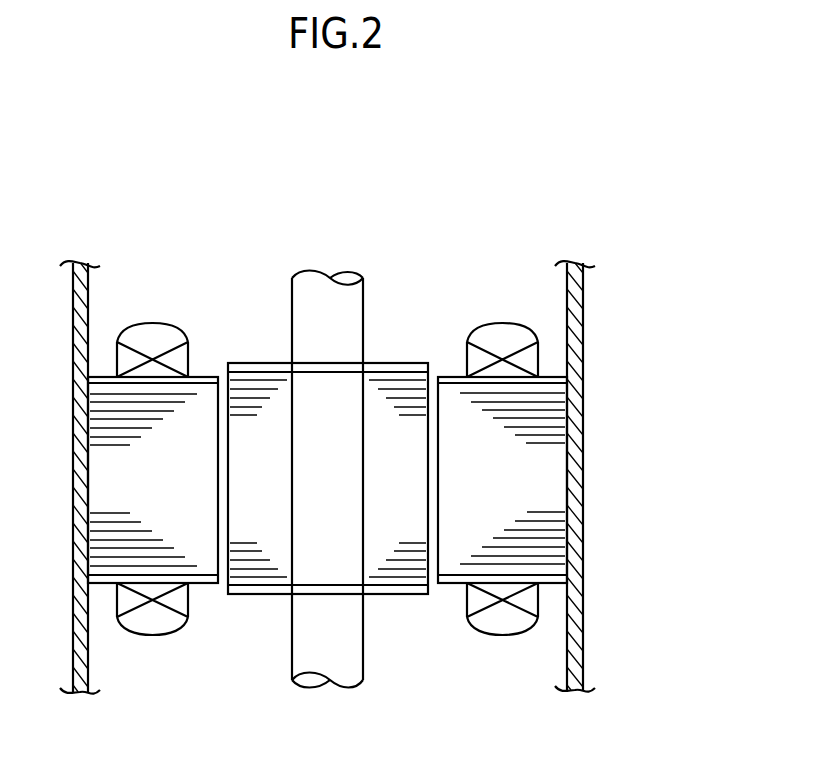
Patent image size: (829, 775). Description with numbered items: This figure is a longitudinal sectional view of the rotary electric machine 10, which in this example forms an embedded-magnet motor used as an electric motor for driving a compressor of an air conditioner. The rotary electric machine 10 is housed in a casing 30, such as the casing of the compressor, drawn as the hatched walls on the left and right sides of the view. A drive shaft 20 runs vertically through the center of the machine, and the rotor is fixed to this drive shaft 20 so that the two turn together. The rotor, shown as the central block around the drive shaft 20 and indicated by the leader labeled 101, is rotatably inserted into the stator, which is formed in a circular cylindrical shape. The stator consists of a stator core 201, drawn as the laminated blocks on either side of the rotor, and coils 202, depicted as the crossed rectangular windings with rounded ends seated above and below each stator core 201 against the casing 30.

The rotary electric machine 10 is at (482, 202).
The drive shaft 20 is at (308, 283).
The casing 30 is at (583, 298).
The rotor core 101 is at (405, 457).
The stator core 201 is at (497, 500).
The coils 202 is at (528, 598).